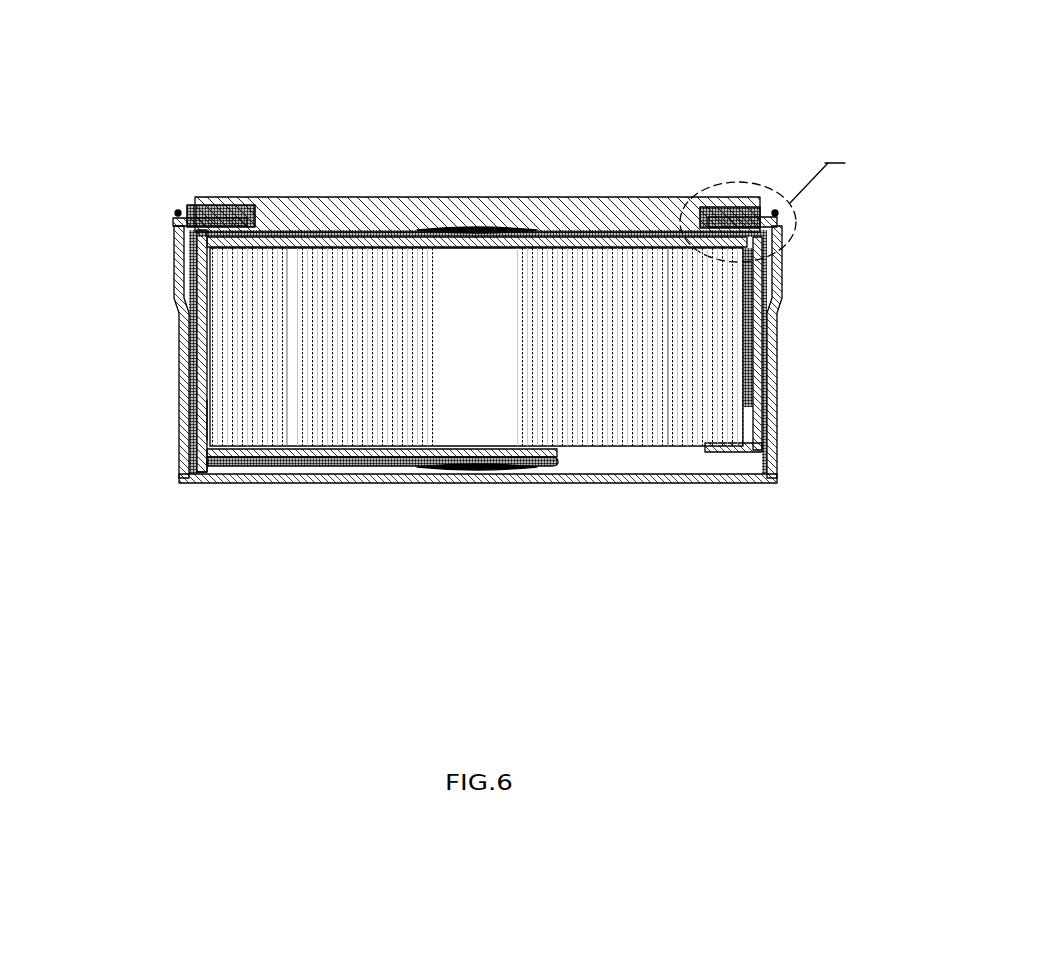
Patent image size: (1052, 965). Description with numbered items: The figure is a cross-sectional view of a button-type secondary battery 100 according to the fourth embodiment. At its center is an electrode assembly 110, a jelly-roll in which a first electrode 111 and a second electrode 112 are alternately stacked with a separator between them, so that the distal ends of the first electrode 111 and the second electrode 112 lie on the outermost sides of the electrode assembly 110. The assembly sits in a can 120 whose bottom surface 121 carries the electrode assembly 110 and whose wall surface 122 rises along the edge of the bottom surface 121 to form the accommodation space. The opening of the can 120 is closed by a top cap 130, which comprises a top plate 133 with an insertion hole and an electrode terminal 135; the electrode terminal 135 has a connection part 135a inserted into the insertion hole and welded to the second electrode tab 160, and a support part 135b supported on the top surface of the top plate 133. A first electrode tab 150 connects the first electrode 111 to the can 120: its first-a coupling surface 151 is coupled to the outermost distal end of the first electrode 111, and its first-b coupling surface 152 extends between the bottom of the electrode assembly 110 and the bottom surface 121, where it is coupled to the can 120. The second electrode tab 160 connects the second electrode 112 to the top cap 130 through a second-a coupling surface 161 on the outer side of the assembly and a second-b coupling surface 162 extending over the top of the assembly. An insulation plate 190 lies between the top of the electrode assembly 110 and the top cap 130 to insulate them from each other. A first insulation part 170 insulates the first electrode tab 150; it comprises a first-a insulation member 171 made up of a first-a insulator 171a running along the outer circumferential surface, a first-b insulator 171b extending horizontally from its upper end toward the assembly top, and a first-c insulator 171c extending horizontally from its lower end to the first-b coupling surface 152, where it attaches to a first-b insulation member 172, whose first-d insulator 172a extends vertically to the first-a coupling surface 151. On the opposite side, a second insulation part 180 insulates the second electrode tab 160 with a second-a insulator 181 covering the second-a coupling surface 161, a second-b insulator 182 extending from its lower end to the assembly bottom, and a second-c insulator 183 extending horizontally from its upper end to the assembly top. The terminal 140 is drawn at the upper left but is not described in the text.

The button-type secondary battery 100 is at (813, 78).
The electrode assembly 110 is at (485, 340).
The first electrode 111 is at (218, 263).
The second electrode 112 is at (742, 434).
The can 120 is at (462, 410).
The bottom surface 121 is at (218, 483).
The wall surface 122 is at (222, 551).
The top cap 130 is at (723, 159).
The top plate 133 is at (768, 212).
The electrode terminal 135 is at (706, 166).
The connection part 135a is at (656, 212).
The support part 135b is at (735, 206).
The electrode terminal 140 is at (206, 203).
The first electrode tab 150 is at (382, 490).
The first-a coupling surface 151 is at (208, 418).
The first-b coupling surface 152 is at (388, 461).
The second electrode tab 160 is at (478, 288).
The second-a coupling surface 161 is at (750, 320).
The second-b coupling surface 162 is at (553, 230).
The first insulation part 170 is at (392, 447).
The first-a insulation member 171 is at (284, 352).
The first-a insulator 171a is at (200, 342).
The first-b insulator 171b is at (203, 238).
The first-c insulator 171c is at (323, 462).
The first-b insulation member 172 is at (540, 458).
The first-d insulator 172a is at (217, 449).
The second insulation part 180 is at (705, 355).
The second-a insulator 181 is at (758, 342).
The second-b insulator 182 is at (781, 458).
The second-c insulator 183 is at (770, 244).
The insulation plate 190 is at (375, 240).